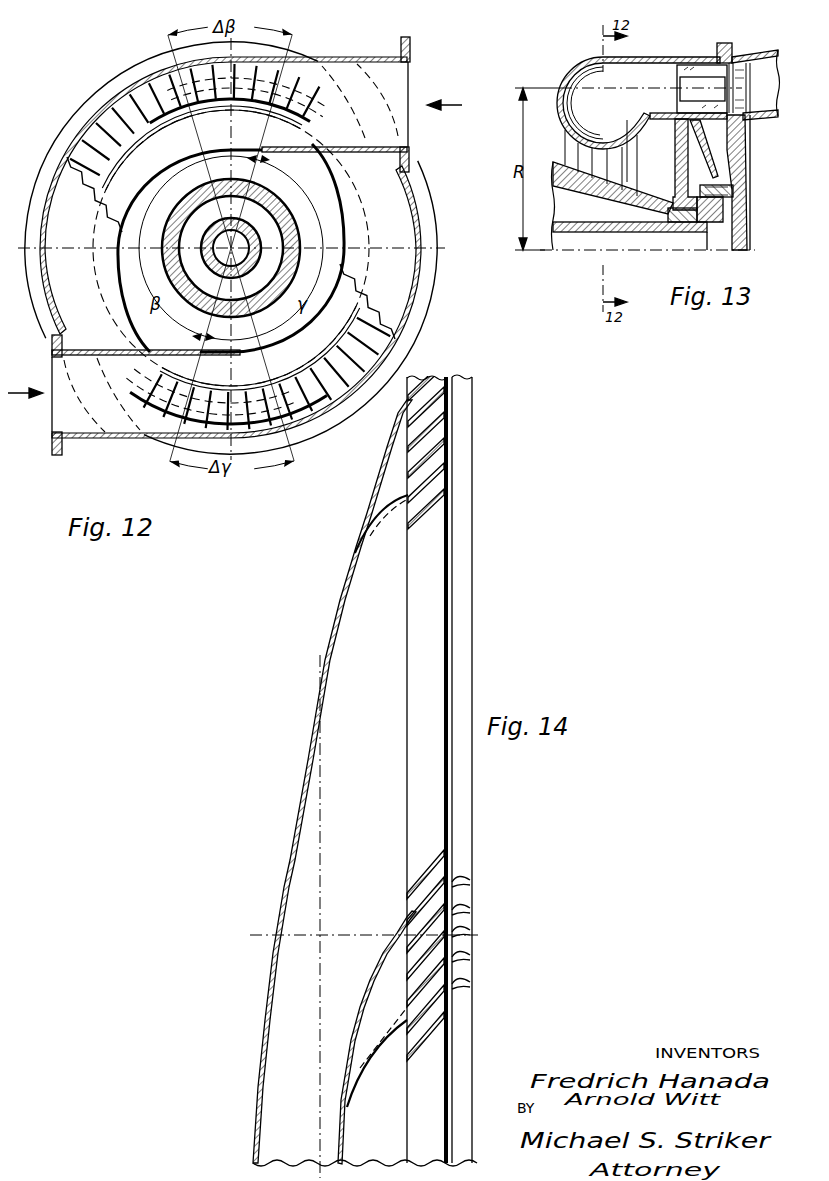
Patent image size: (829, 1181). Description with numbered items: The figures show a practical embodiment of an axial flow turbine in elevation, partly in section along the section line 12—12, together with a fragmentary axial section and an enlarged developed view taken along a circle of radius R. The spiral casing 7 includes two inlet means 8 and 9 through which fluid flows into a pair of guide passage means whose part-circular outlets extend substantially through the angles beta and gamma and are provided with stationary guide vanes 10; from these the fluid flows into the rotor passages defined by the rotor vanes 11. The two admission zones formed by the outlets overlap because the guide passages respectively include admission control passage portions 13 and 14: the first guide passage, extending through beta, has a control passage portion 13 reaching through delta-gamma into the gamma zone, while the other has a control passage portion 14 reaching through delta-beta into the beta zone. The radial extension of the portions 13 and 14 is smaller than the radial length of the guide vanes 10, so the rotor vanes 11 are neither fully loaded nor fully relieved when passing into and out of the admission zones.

In FIG. 12, the spiral casing 7 is at (200, 452).
In FIG. 13, the spiral casing 7 is at (583, 61).
In FIG. 14, the spiral casing 7 is at (302, 793).
In FIG. 12, the inlet means 8 is at (375, 72).
In FIG. 12, the inlet means 9 is at (88, 420).
In FIG. 12, the stationary guide vanes 10 is at (135, 95).
In FIG. 13, the stationary guide vanes 10 is at (698, 72).
In FIG. 14, the stationary guide vanes 10 is at (413, 520).
In FIG. 13, the rotor vanes 11 is at (742, 60).
In FIG. 14, the rotor vanes 11 is at (452, 882).
In FIG. 13, the housing wall 12 is at (743, 157).
In FIG. 12, the admission control passage portion 13 is at (167, 400).
In FIG. 14, the admission control passage portion 13 is at (367, 992).
In FIG. 12, the admission control passage portion 14 is at (297, 98).
In FIG. 14, the admission control passage portion 14 is at (364, 548).